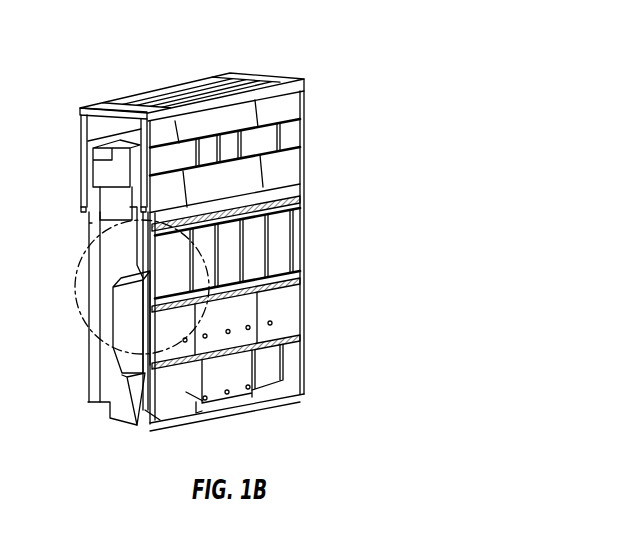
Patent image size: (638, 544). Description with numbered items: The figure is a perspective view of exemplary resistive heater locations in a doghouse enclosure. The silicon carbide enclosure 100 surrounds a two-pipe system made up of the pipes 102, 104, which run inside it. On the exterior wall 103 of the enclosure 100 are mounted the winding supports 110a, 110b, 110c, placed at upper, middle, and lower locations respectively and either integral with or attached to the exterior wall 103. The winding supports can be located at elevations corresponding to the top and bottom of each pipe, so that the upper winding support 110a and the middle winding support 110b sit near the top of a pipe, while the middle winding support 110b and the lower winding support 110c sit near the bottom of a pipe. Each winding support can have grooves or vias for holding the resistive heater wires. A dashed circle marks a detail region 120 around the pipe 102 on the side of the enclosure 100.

The silicon carbide enclosure 100 is at (301, 50).
The pipe of the two-pipe system 102 is at (126, 315).
The exterior wall 103 is at (79, 108).
The pipe of the two-pipe system 104 is at (103, 175).
The upper winding support 110a is at (272, 140).
The middle winding support 110b is at (282, 248).
The lower winding support 110c is at (270, 372).
The detail region 120 is at (83, 250).